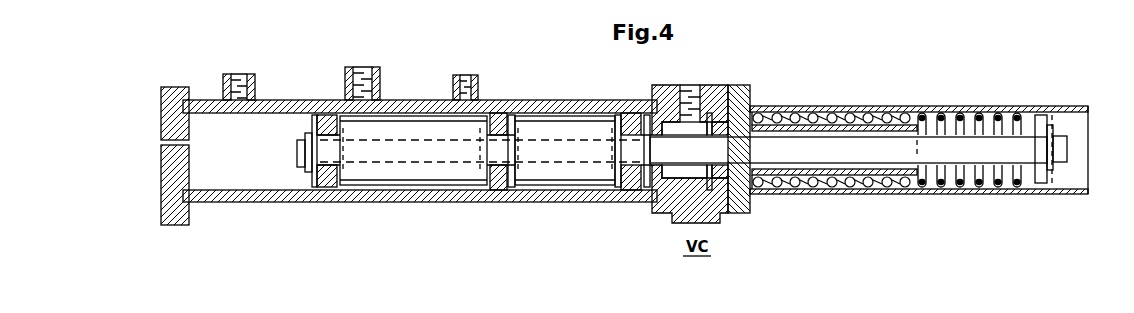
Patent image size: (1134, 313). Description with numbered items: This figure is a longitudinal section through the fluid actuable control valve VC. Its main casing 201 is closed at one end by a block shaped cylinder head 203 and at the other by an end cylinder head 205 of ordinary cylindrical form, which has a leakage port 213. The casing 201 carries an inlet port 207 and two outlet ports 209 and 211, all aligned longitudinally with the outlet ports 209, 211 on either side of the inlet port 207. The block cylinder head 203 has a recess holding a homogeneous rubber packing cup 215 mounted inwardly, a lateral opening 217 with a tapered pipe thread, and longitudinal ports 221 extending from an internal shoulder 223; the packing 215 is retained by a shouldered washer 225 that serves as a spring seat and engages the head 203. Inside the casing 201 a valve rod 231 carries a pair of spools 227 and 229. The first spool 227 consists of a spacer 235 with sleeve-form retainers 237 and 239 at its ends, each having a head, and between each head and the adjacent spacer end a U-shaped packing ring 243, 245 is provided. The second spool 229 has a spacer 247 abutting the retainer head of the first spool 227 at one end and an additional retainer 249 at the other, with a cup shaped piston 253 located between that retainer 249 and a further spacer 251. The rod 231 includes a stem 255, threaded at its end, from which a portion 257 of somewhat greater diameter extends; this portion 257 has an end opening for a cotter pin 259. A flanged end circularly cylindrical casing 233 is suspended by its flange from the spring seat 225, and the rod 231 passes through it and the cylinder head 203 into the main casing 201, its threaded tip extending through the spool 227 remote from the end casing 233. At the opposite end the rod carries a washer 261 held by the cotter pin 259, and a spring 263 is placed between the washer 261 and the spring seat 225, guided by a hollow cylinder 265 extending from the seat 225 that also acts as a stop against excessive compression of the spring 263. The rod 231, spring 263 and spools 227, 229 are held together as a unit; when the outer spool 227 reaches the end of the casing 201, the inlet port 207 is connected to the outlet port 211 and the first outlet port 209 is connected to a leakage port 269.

The main casing 201 is at (472, 197).
The block shaped cylinder head 203 is at (662, 93).
The end cylinder head 205 is at (161, 173).
The inlet port 207 is at (379, 73).
The outlet port 209 is at (475, 75).
The outlet port 211 is at (237, 75).
The leakage port 213 is at (161, 141).
The packing cup 215 is at (712, 128).
The lateral opening 217 is at (694, 87).
The longitudinal ports 221 is at (657, 132).
The internal shoulder 223 is at (698, 137).
The shouldered washer 225 is at (748, 210).
The spool 227 is at (405, 178).
The spool 229 is at (570, 180).
The valve rod 231 is at (822, 150).
The end circularly cylindrical casing 233 is at (992, 191).
The spacer 235 is at (424, 130).
The retainer 237 is at (344, 149).
The retainer 239 is at (482, 152).
The U-shaped packing ring 243 is at (347, 130).
The U-shaped packing ring 245 is at (498, 188).
The spacer 247 is at (575, 120).
The retainer 249 is at (617, 130).
The spacer 251 is at (648, 186).
The cup shaped piston 253 is at (630, 190).
The stem 255 is at (296, 152).
The portion of greater diameter 257 is at (1062, 147).
The cotter pin 259 is at (1050, 160).
The washer 261 is at (1040, 186).
The spring 263 is at (985, 112).
The hollow cylinder 265 is at (866, 184).
The leakage port 269 is at (511, 186).